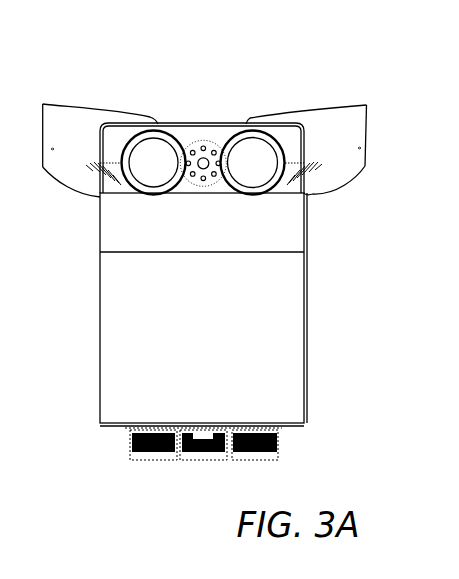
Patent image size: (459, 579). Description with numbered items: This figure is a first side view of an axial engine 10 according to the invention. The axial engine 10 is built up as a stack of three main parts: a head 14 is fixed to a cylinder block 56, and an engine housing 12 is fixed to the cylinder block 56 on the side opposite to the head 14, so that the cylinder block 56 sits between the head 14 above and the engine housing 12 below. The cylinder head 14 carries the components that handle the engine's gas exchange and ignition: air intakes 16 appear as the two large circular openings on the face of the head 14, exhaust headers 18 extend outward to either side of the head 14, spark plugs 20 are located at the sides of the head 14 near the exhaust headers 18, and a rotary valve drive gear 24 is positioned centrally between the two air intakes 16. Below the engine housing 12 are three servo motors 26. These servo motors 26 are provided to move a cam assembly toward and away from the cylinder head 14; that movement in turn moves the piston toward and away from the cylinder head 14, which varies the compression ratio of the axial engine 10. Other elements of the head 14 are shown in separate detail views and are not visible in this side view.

The axial engine 10 is at (216, 214).
The engine housing 12 is at (203, 309).
The head 14 is at (292, 140).
The air intakes 16 is at (148, 152).
The exhaust headers 18 is at (72, 137).
The spark plugs 20 is at (100, 173).
The rotary valve drive gear 24 is at (210, 148).
The servo motors 26 is at (147, 457).
The cylinder block 56 is at (137, 234).